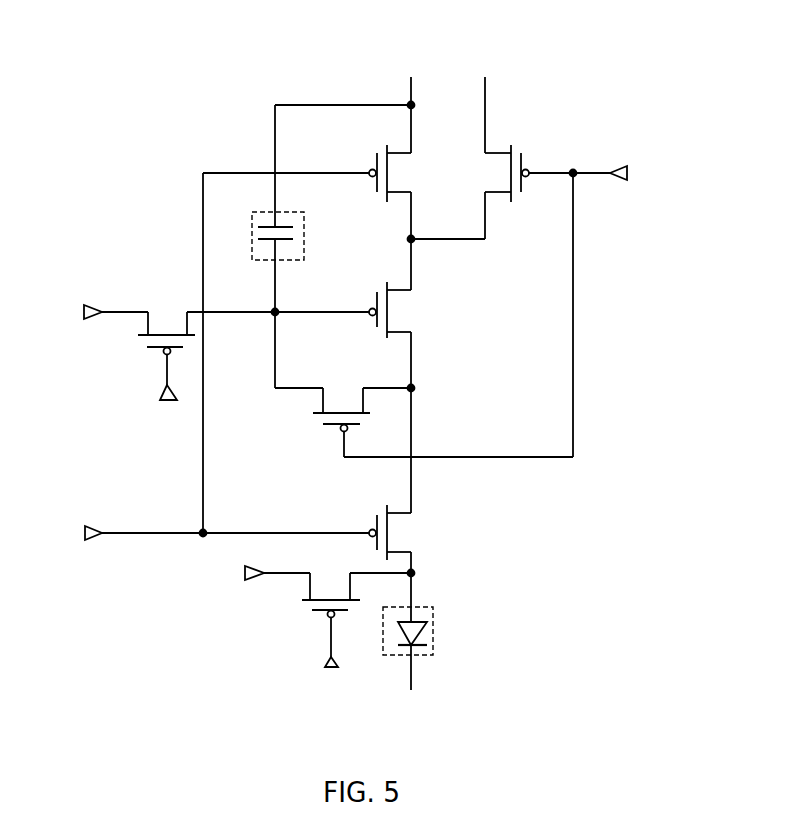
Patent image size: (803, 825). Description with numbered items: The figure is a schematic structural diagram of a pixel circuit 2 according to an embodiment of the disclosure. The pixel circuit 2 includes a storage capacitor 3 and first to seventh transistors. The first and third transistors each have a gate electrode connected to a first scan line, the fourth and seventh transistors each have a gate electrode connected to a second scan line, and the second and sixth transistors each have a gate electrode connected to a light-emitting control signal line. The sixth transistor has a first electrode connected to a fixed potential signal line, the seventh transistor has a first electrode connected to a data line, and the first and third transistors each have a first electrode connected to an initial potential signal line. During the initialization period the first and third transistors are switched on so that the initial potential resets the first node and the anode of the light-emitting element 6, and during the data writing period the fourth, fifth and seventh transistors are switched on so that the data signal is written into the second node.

The pixel circuit 2 is at (78, 74).
The storage capacitor 3 is at (268, 211).
The light emitting element (OLED) 6 is at (433, 630).